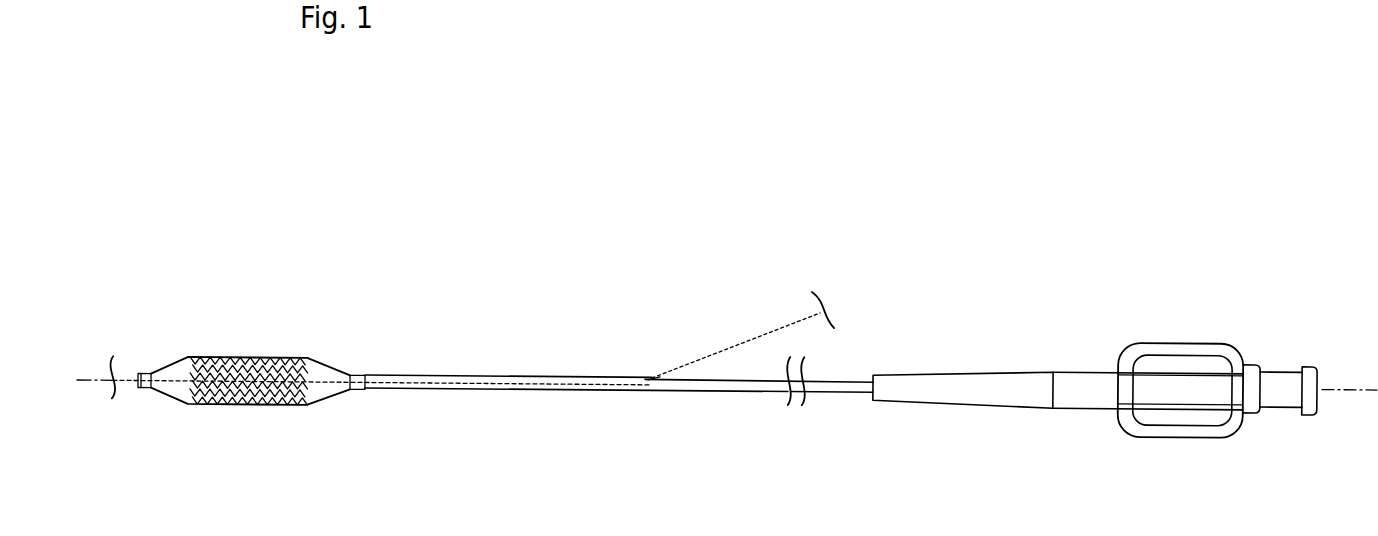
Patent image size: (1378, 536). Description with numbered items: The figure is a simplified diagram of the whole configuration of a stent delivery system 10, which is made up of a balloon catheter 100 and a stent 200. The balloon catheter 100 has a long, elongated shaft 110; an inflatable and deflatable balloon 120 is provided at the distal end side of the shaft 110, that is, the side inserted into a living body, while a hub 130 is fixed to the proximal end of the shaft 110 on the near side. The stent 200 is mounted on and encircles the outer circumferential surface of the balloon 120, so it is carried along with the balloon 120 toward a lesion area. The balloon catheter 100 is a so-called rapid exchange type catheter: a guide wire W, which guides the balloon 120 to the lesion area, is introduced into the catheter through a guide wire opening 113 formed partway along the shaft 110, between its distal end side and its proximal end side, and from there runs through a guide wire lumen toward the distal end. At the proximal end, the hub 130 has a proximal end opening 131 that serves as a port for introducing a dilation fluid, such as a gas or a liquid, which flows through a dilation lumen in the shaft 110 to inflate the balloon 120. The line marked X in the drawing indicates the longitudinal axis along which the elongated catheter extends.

The stent delivery system 10 is at (180, 123).
The balloon catheter 100 is at (372, 335).
The shaft 110 is at (445, 388).
The guide wire opening 113 is at (652, 378).
The balloon 120 is at (170, 397).
The stent 200 is at (235, 397).
The hub 130 is at (1166, 432).
The proximal end opening 131 is at (1322, 397).
The guide wire W is at (733, 345).
The axis X is at (101, 378).